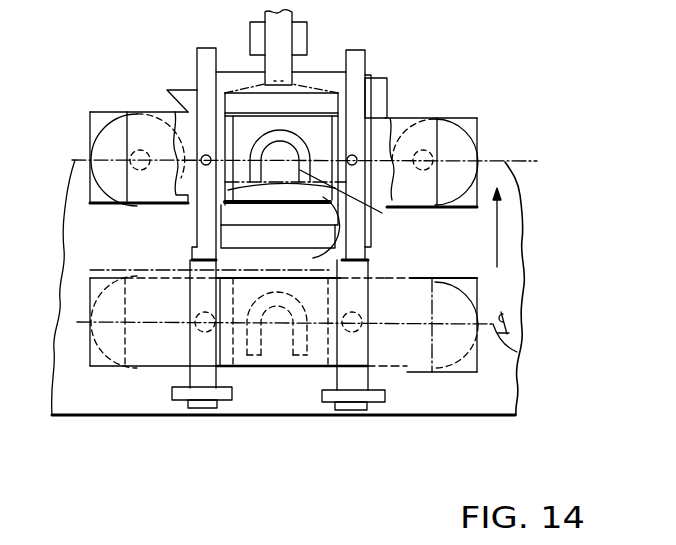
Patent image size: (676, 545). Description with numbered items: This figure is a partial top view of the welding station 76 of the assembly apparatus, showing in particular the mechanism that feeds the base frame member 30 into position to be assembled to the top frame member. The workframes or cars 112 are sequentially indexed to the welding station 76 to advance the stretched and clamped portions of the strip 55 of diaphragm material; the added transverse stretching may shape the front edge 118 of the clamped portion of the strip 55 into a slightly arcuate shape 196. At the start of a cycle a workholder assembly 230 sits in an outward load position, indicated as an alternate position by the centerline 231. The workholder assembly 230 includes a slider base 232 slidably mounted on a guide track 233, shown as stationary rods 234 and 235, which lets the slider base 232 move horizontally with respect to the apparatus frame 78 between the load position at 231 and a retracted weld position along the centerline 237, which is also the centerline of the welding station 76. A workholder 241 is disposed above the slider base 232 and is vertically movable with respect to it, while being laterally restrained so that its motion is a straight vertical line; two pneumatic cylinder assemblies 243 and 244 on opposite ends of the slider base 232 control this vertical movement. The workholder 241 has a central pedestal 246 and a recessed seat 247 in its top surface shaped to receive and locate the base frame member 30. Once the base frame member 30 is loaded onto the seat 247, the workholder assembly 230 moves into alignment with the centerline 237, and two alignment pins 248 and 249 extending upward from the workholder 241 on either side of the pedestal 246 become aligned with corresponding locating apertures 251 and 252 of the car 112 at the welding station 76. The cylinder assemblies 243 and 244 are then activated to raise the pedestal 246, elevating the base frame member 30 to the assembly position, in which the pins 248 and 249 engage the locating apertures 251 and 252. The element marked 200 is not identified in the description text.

The actuator rod 200 is at (314, 44).
The welding station 76 is at (380, 56).
The locating aperture 251 is at (206, 154).
The workholder 241 is at (128, 135).
The workframe or car 112 is at (371, 82).
The strip of diaphragm material 55 is at (387, 103).
The locating aperture 252 is at (410, 118).
The workholder assembly 230 is at (478, 135).
The centerline 237 is at (523, 163).
The pneumatic cylinder assembly 243 is at (95, 165).
The base frame member 30 is at (353, 203).
The front edge 118 is at (187, 204).
The arcuate shape 196 is at (335, 183).
The central pedestal 246 is at (400, 266).
The pneumatic cylinder assembly 244 is at (452, 192).
The alignment pin 248 is at (200, 328).
The recessed seat 247 is at (260, 362).
The alignment pin 249 is at (360, 332).
The centerline 231 is at (517, 360).
The apparatus frame 78 is at (505, 403).
The slider base 232 is at (100, 366).
The guide track 233 is at (187, 375).
The stationary rod 234 is at (210, 386).
The stationary rod 235 is at (347, 388).